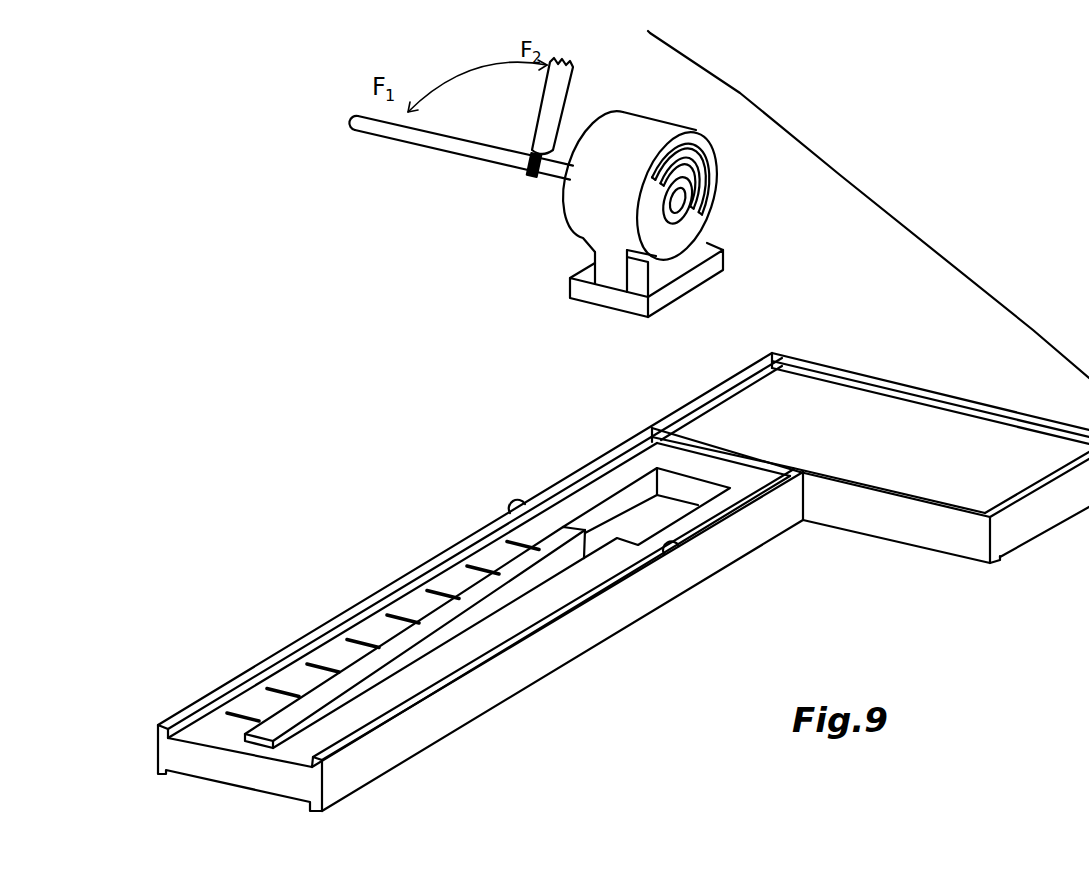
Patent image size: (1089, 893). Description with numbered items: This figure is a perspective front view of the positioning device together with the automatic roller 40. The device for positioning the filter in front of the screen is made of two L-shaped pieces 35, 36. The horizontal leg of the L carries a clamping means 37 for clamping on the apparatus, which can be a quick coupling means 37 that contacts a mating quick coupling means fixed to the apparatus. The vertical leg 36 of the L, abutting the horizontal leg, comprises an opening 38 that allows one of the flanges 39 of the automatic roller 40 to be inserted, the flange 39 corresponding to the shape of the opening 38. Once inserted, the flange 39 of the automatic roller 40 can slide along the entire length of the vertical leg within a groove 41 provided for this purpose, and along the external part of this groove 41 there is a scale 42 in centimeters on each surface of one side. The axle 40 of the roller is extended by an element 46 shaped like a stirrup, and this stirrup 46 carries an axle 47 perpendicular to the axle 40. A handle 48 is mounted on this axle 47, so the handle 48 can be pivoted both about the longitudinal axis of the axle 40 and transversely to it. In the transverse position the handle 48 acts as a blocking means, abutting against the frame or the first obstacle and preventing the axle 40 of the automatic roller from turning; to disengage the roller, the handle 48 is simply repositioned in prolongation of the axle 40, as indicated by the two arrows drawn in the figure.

The L-shaped piece 35 is at (497, 679).
The L-shaped piece 36 is at (917, 522).
The clamping means 37 is at (983, 452).
The opening 38 is at (665, 512).
The flange 39 is at (613, 297).
The automatic roller 40 is at (690, 210).
The groove 41 is at (482, 618).
The scale 42 is at (332, 650).
The stirrup-shaped element 46 is at (557, 175).
The axle 47 is at (532, 178).
The handle 48 is at (428, 140).